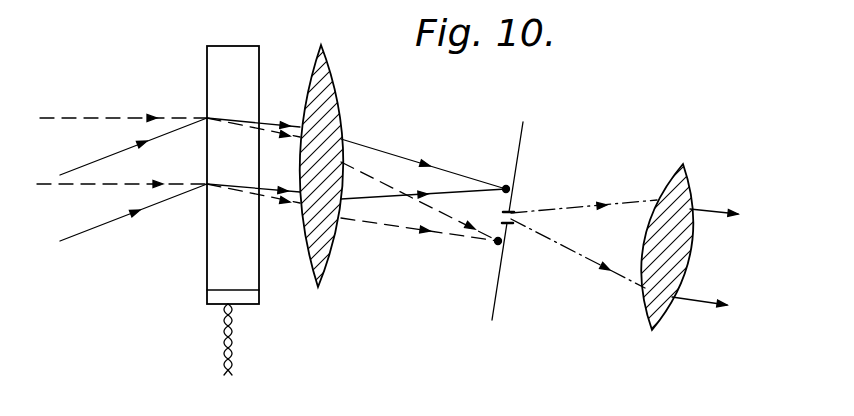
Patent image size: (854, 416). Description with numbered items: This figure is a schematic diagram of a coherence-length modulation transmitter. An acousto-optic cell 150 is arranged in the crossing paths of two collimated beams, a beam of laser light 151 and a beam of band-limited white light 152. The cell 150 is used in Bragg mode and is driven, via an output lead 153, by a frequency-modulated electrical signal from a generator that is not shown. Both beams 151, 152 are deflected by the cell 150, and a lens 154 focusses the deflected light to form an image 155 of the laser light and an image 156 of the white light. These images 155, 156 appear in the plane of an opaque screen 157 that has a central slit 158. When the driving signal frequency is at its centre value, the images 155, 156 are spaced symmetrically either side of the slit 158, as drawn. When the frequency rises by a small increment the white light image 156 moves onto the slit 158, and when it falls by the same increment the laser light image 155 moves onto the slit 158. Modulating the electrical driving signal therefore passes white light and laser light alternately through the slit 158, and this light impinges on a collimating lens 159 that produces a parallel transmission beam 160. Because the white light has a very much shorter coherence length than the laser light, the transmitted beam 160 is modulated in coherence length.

The acousto-optic cell 150 is at (240, 46).
The collimated beam of laser light 151 is at (65, 118).
The collimated beam of band-limited white light 152 is at (85, 165).
The output lead 153 is at (222, 345).
The lens 154 is at (340, 107).
The image of laser light 155 is at (497, 245).
The image of white light 156 is at (505, 186).
The opaque screen 157 is at (524, 130).
The central slit 158 is at (512, 211).
The collimating lens 159 is at (652, 332).
The parallel transmission beam 160 is at (714, 214).